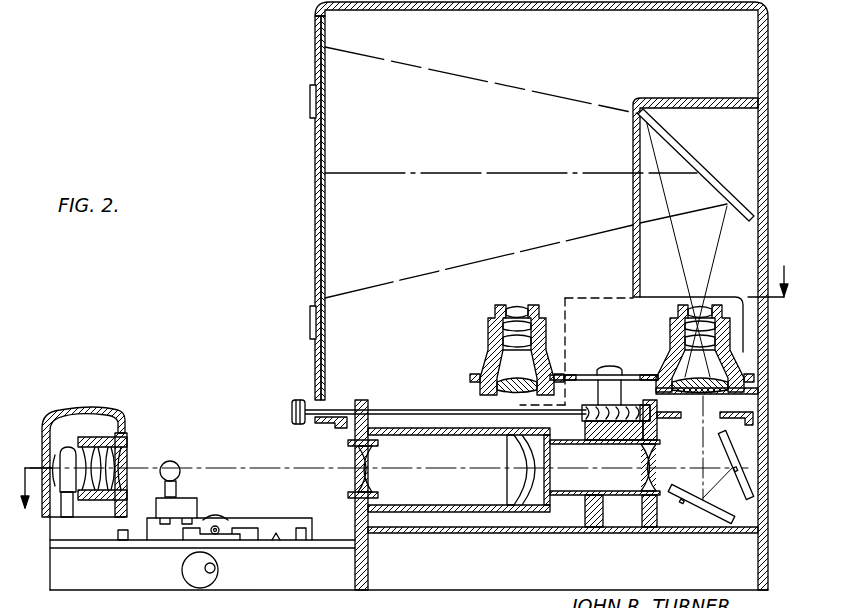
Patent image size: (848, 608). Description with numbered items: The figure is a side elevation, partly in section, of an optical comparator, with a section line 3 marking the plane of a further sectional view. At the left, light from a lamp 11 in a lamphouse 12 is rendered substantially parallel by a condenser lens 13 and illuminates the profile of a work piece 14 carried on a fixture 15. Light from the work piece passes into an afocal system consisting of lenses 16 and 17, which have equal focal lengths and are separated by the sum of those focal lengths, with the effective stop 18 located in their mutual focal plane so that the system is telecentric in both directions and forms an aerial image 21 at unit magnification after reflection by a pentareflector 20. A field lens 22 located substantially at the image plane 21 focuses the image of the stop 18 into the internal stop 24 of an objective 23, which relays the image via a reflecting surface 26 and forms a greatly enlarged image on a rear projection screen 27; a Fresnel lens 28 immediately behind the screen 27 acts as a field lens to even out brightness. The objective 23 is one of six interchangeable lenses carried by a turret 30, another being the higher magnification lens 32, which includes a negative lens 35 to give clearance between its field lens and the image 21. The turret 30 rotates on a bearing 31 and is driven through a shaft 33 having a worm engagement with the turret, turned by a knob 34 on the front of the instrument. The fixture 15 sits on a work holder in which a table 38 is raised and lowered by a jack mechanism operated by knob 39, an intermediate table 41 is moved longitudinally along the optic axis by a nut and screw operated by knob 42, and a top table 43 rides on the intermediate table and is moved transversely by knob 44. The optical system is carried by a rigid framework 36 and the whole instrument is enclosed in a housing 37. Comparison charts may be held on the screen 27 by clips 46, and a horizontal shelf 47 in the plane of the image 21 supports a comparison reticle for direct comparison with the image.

The section line 3 is at (402, 390).
The lamp 11 is at (62, 452).
The lamphouse 12 is at (62, 411).
The condenser lens 13 is at (122, 458).
The work piece 14 is at (171, 461).
The fixture 15 is at (178, 504).
The lens 16 is at (356, 462).
The lens 17 is at (640, 476).
The effective stop 18 is at (510, 452).
The pentareflector 20 is at (710, 509).
The aerial image 21 is at (703, 416).
The field lens 22 is at (758, 391).
The objective 23 is at (667, 345).
The internal stop 24 is at (722, 336).
The reflecting surface 26 is at (708, 176).
The rear projection screen 27 is at (315, 251).
The Fresnel lens 28 is at (325, 245).
The turret 30 is at (640, 374).
The bearing 31 is at (592, 388).
The interchangeable lens 32 is at (488, 335).
The shaft 33 is at (431, 409).
The knob 34 is at (295, 404).
The negative lens 35 is at (520, 305).
The framework 36 is at (633, 264).
The housing 37 is at (760, 63).
The table 38 is at (236, 546).
The knob 39 is at (183, 569).
The intermediate table 41 is at (240, 538).
The knob 42 is at (118, 537).
The top table 43 is at (283, 525).
The knob 44 is at (224, 530).
The clips 46 is at (310, 108).
The horizontal shelf 47 is at (756, 420).